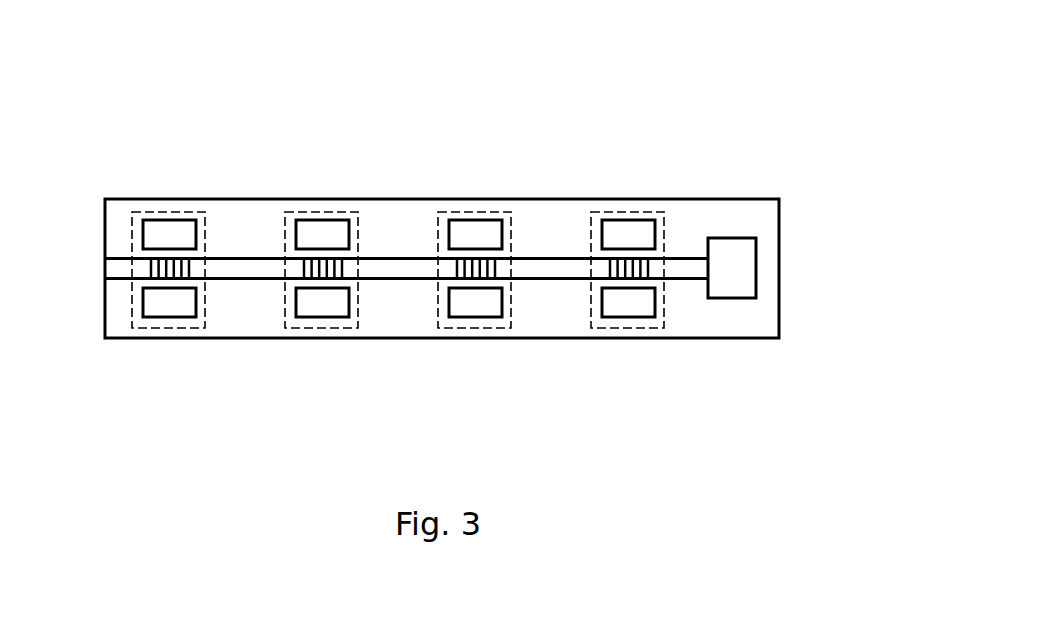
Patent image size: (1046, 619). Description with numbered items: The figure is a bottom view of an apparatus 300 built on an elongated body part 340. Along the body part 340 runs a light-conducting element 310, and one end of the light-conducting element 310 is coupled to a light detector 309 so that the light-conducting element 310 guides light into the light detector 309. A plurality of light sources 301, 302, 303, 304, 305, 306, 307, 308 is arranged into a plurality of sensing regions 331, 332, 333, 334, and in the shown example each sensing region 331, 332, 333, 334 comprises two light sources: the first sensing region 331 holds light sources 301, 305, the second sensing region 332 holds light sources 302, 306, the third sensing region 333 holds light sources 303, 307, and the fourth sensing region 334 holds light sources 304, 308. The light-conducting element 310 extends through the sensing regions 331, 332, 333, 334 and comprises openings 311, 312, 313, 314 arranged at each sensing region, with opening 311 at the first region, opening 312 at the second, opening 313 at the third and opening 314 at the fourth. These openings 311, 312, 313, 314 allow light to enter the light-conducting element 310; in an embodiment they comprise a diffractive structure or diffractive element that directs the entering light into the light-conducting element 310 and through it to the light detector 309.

The apparatus 300 is at (684, 84).
The elongated body part 340 is at (720, 197).
The light-conducting element 310 is at (690, 281).
The light detector 309 is at (757, 270).
The light source 301 is at (190, 218).
The light source 302 is at (343, 218).
The light source 303 is at (496, 218).
The light source 304 is at (649, 218).
The light source 305 is at (170, 317).
The light source 306 is at (322, 317).
The light source 307 is at (472, 317).
The light source 308 is at (623, 317).
The opening 311 is at (151, 262).
The opening 312 is at (304, 262).
The opening 313 is at (457, 262).
The opening 314 is at (610, 262).
The sensing region 331 is at (130, 215).
The sensing region 332 is at (283, 215).
The sensing region 333 is at (436, 215).
The sensing region 334 is at (589, 215).